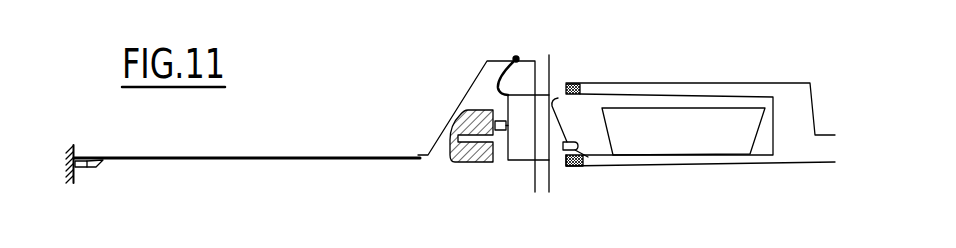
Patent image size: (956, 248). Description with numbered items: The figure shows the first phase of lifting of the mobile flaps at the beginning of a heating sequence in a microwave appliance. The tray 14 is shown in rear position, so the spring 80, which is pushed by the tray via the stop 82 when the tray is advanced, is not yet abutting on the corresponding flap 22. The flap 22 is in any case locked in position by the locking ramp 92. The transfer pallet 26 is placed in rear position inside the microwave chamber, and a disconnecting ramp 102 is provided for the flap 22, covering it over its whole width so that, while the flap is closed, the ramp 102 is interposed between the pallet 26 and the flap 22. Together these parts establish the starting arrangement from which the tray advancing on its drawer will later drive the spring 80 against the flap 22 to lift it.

The transfer pallet 26 is at (247, 155).
The disconnecting ramp 102 is at (462, 99).
The flap 22 is at (522, 147).
The locking ramp 92 is at (466, 163).
The tray 14 is at (597, 83).
The spring 80 is at (561, 118).
The stop 82 is at (582, 150).